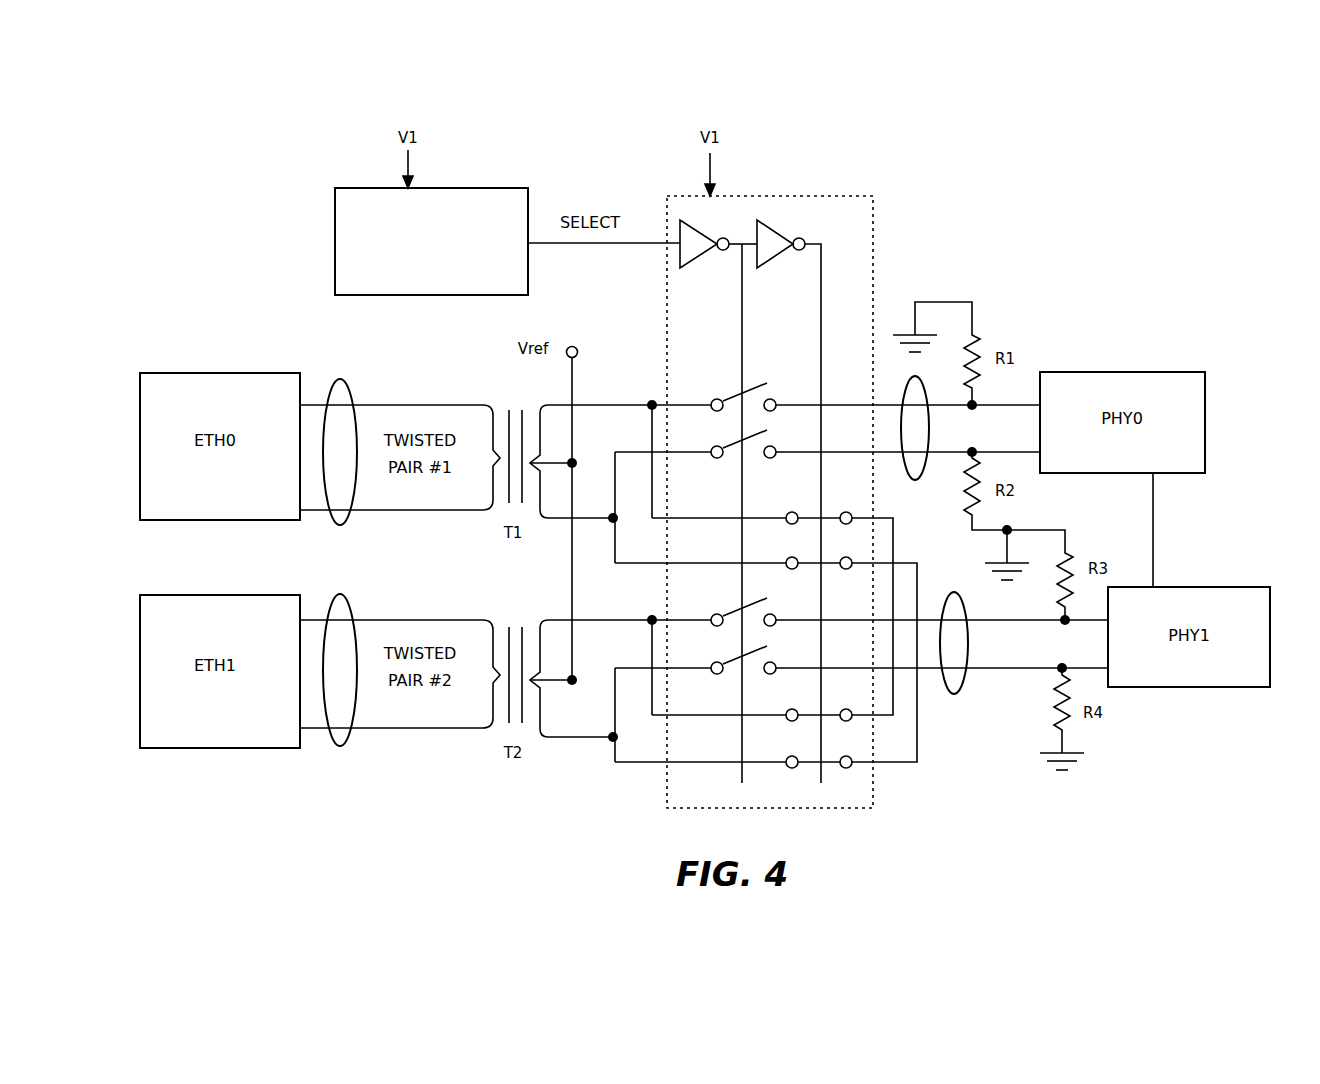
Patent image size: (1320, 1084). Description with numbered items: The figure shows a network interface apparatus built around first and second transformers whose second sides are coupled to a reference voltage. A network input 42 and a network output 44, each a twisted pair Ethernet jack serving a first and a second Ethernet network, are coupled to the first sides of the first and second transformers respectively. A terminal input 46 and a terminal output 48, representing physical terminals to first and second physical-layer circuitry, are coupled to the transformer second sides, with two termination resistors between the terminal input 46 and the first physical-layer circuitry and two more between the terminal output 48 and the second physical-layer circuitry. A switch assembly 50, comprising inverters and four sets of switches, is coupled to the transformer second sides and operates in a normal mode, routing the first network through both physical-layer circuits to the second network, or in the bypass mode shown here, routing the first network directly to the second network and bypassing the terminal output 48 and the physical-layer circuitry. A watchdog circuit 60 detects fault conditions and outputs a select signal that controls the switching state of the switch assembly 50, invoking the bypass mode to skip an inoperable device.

The network input 42 is at (350, 394).
The network output 44 is at (351, 606).
The terminal input 46 is at (919, 478).
The terminal output 48 is at (957, 692).
The switch assembly 50 is at (876, 236).
The watchdog circuit 60 is at (528, 188).